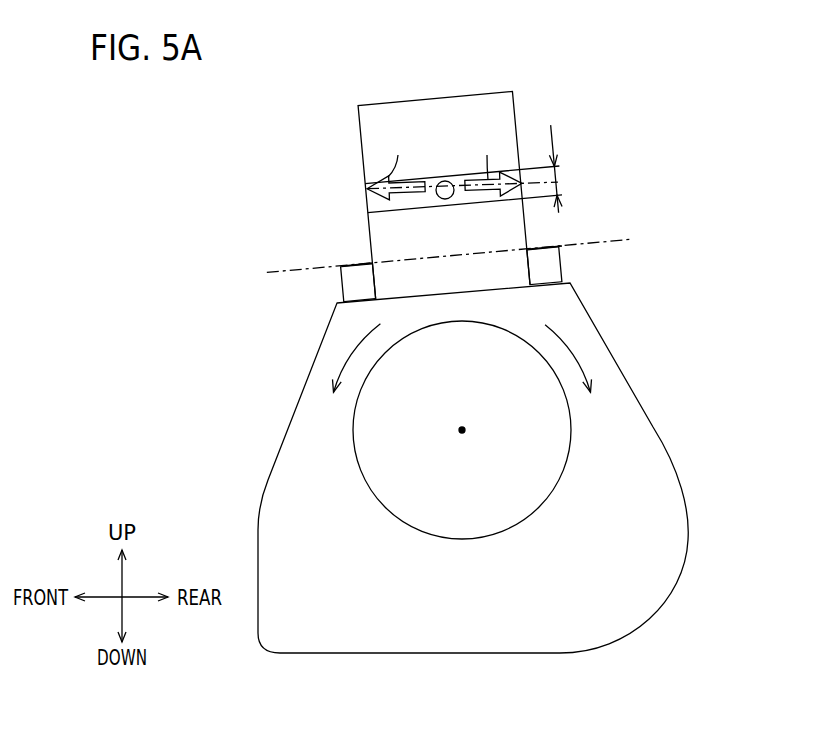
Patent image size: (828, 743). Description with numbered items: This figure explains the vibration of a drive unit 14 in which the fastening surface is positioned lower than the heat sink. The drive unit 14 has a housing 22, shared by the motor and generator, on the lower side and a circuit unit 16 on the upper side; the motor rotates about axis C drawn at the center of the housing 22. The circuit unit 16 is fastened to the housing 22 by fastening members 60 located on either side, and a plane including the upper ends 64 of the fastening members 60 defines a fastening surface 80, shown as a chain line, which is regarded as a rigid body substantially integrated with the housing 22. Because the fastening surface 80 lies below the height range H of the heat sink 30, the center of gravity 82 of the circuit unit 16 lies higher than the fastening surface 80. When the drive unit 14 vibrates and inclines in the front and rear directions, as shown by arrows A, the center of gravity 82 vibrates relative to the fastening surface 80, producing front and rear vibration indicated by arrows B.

The drive unit 14 is at (168, 126).
The circuit unit 16 is at (348, 132).
The housing 22 is at (655, 427).
The heat sink 30 is at (430, 179).
The fastening members 60 is at (451, 274).
The upper ends 64 is at (360, 263).
The fastening surface 80 is at (450, 255).
The center of gravity 82 is at (443, 180).